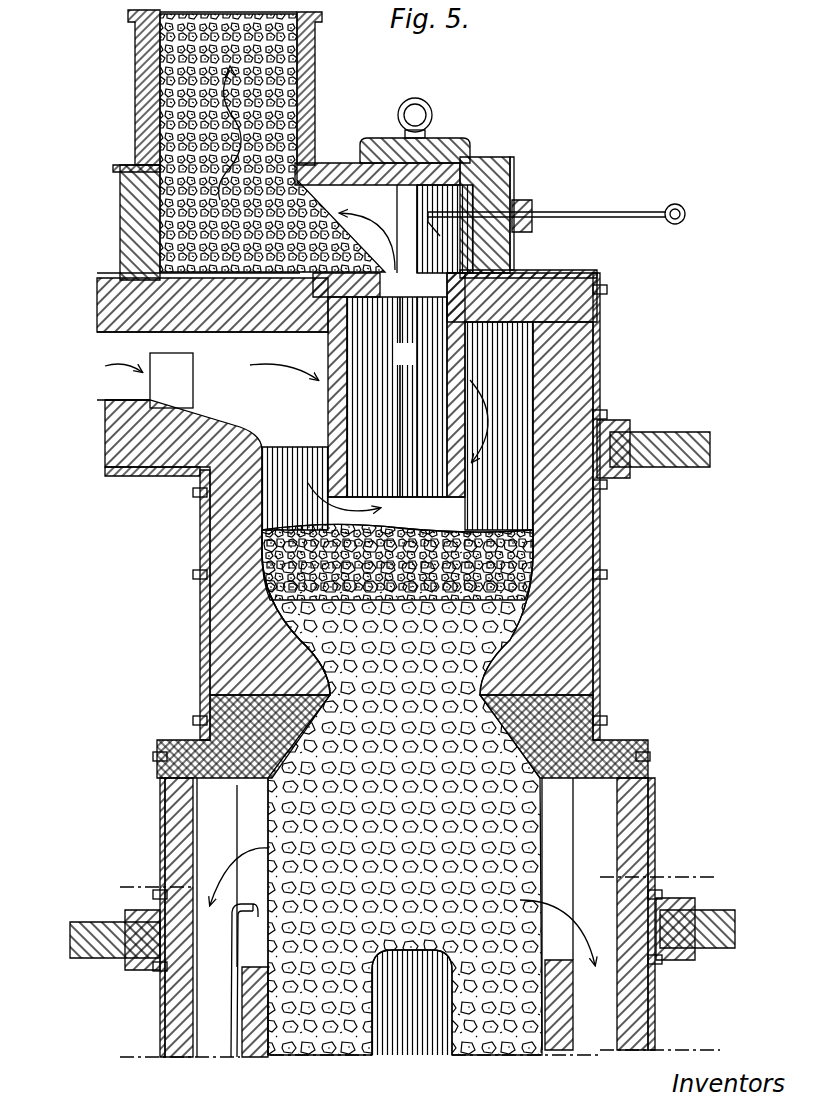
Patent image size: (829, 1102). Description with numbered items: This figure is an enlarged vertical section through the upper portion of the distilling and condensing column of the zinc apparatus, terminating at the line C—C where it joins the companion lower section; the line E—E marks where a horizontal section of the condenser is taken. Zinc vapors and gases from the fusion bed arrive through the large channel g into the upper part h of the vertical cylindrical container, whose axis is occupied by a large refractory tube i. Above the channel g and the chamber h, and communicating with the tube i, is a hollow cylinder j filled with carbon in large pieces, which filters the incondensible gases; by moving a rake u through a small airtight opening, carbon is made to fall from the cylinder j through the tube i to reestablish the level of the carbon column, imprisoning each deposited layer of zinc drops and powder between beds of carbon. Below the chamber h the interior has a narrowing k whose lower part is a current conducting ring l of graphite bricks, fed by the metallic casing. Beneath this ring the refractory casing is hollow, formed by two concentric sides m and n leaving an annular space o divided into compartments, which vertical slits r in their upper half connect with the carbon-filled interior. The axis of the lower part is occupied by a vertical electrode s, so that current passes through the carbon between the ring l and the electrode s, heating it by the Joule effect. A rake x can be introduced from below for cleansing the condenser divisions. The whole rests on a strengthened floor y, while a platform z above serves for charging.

The hollow cylinder j is at (307, 45).
The rake u is at (578, 213).
The channel g is at (120, 355).
The upper part (chamber) h is at (216, 378).
The refractory tube i is at (389, 385).
The platform z is at (665, 450).
The narrowing k is at (330, 690).
The current conducting ring l is at (210, 692).
The annular space o is at (404, 916).
The vertical slits r is at (405, 872).
The section line E— E is at (416, 866).
The rake x is at (233, 957).
The strengthened floor y is at (102, 945).
The concentric side (outer) m is at (185, 1003).
The concentric side (inner) n is at (252, 1008).
The section line C— C is at (417, 1040).
The vertical electrode s is at (390, 1040).